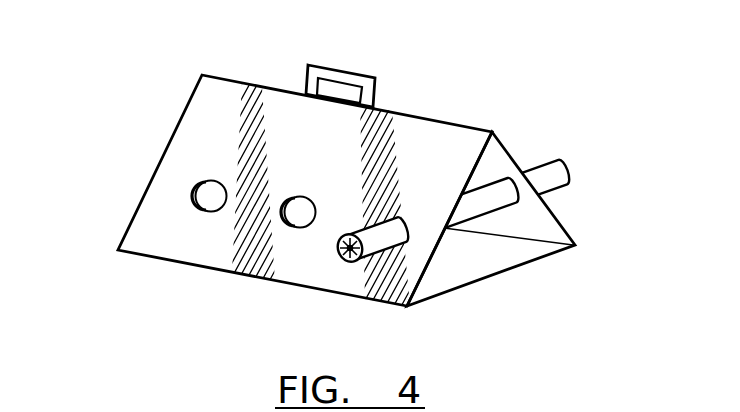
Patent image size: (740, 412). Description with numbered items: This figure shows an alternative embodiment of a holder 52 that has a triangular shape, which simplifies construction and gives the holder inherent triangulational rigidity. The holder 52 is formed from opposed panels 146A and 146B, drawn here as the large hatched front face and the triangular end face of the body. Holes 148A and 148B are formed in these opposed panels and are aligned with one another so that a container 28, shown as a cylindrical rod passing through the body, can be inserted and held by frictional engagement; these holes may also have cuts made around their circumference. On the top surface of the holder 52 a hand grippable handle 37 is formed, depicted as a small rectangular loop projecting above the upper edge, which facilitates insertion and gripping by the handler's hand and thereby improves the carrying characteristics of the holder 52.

The holder 52 is at (190, 102).
The hand grippable handle 37 is at (323, 65).
The first panel 146A is at (163, 225).
The second panel 146B is at (540, 230).
The hole 148A is at (405, 223).
The hole 148B is at (508, 165).
The container 28 is at (398, 245).